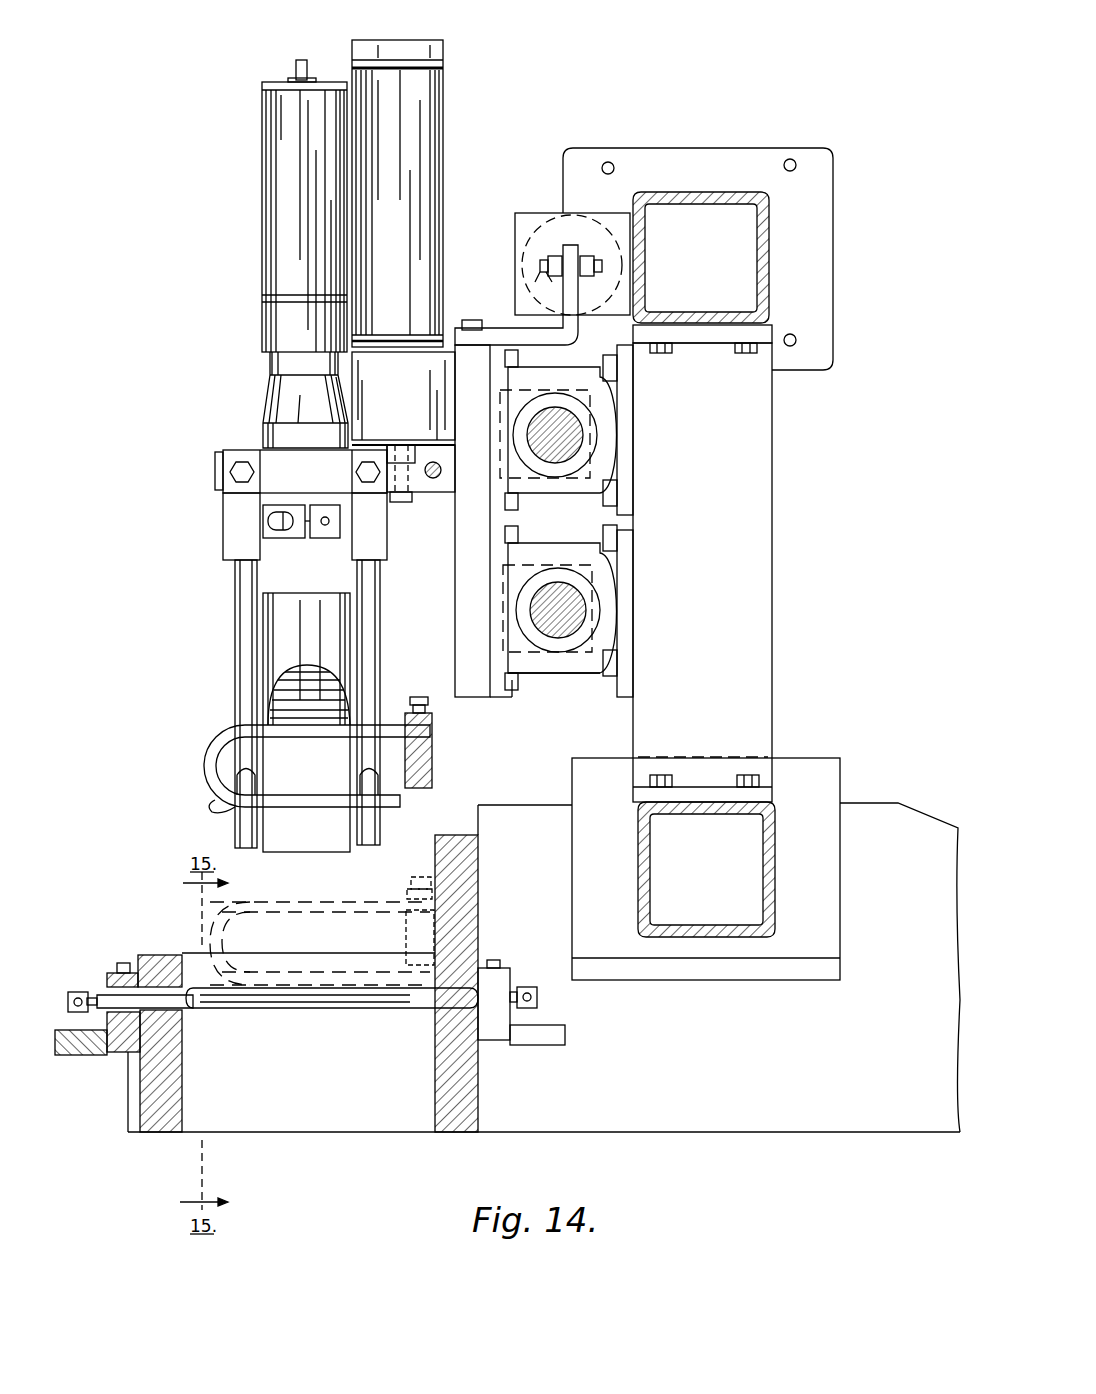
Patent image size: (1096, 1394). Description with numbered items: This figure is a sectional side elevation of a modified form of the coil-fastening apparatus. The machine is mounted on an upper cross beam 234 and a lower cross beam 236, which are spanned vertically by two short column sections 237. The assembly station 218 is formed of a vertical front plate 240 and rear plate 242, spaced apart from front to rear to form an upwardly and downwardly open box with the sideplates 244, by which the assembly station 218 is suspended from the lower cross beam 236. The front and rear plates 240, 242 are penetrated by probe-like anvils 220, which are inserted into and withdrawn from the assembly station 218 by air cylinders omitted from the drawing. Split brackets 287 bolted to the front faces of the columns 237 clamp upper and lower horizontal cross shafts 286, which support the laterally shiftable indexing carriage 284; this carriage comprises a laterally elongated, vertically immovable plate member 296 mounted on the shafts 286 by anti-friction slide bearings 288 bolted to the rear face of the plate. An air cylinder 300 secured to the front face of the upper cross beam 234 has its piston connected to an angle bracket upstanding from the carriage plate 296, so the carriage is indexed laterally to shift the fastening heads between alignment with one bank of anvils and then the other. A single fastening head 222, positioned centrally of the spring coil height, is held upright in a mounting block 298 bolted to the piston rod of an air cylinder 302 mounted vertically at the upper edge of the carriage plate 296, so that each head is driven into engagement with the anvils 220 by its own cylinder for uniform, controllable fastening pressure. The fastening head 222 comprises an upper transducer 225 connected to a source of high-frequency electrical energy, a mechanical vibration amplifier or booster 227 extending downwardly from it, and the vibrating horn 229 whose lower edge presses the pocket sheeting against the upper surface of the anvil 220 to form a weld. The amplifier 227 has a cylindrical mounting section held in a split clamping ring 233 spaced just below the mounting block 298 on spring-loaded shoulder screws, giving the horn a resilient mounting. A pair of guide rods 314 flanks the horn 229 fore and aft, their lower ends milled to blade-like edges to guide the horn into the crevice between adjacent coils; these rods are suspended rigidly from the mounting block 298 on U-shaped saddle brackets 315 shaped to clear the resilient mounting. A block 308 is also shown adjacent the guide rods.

The air cylinder 302 is at (445, 100).
The upper transducer 225 is at (262, 193).
The fastening head 222 is at (252, 333).
The mechanical vibration amplifier 227 is at (270, 393).
The mounting block 298 is at (225, 471).
The U-shaped saddle brackets 315 is at (235, 538).
The split clamping ring 233 is at (342, 535).
The guide rods 314 is at (240, 610).
The vibrating horn 229 is at (272, 657).
The stop block 308 is at (432, 760).
The carriage plate 296 is at (456, 645).
The air cylinder 300 is at (520, 213).
The upper cross beam 234 is at (705, 192).
The column sections 237 is at (775, 557).
The lower cross beam 236 is at (718, 937).
The anti-friction slide bearings 288 is at (592, 415).
The horizontal cross shafts 286 is at (578, 435).
The split brackets 287 is at (630, 540).
The indexing carriage 284 is at (553, 678).
The anvils 220 is at (298, 1010).
The front plate 240 is at (183, 1097).
The rear plate 242 is at (480, 1097).
The sideplates 244 is at (382, 1122).
The assembly station 218 is at (264, 1139).